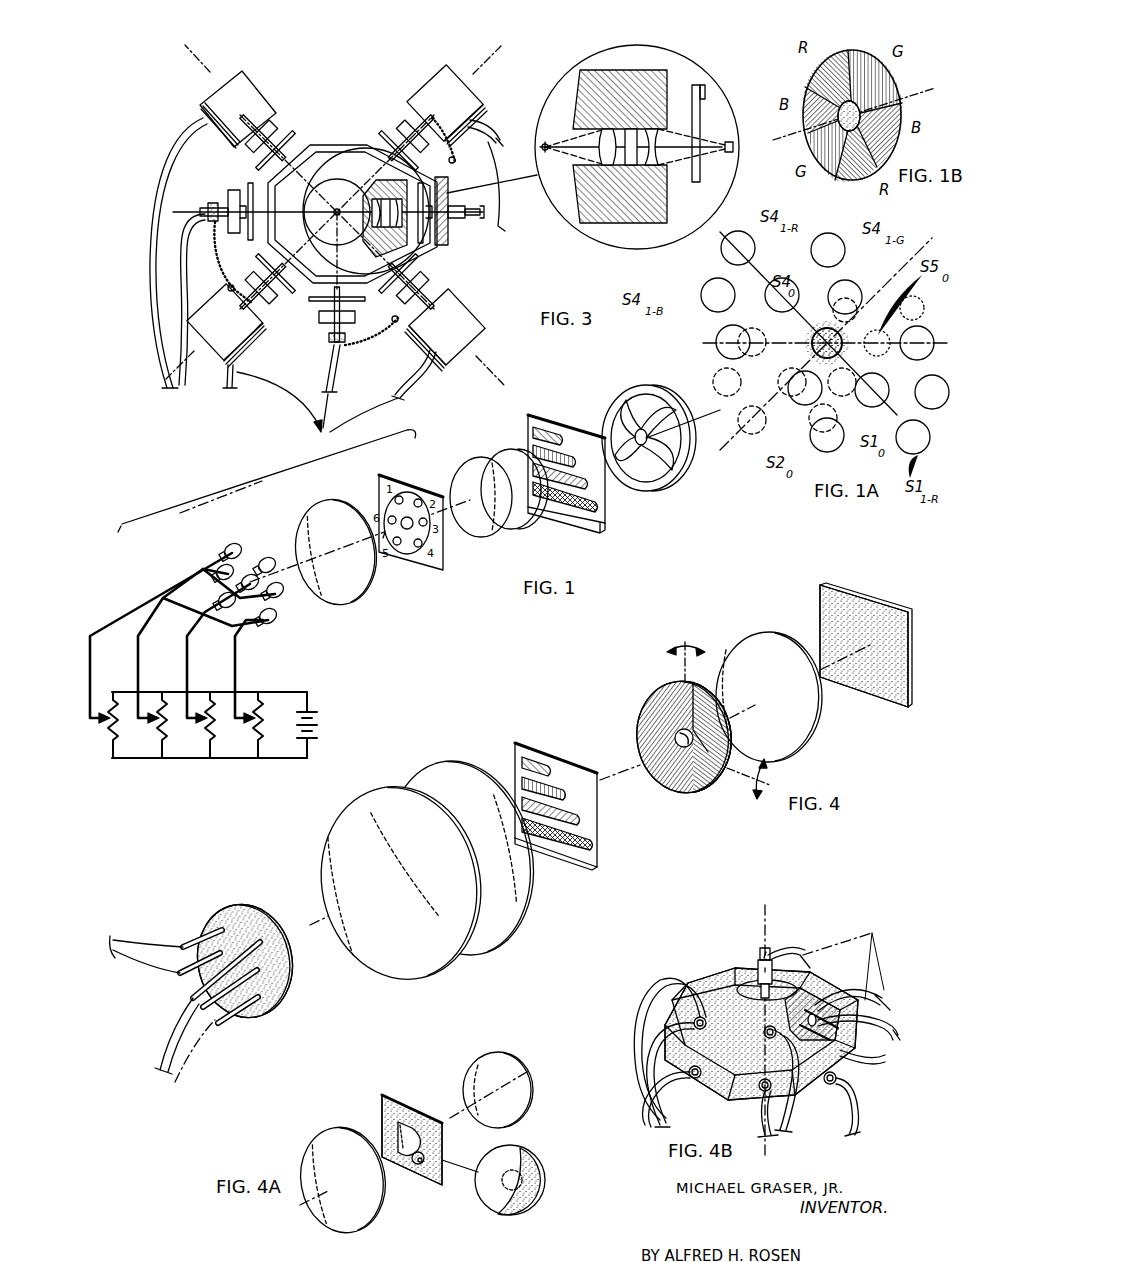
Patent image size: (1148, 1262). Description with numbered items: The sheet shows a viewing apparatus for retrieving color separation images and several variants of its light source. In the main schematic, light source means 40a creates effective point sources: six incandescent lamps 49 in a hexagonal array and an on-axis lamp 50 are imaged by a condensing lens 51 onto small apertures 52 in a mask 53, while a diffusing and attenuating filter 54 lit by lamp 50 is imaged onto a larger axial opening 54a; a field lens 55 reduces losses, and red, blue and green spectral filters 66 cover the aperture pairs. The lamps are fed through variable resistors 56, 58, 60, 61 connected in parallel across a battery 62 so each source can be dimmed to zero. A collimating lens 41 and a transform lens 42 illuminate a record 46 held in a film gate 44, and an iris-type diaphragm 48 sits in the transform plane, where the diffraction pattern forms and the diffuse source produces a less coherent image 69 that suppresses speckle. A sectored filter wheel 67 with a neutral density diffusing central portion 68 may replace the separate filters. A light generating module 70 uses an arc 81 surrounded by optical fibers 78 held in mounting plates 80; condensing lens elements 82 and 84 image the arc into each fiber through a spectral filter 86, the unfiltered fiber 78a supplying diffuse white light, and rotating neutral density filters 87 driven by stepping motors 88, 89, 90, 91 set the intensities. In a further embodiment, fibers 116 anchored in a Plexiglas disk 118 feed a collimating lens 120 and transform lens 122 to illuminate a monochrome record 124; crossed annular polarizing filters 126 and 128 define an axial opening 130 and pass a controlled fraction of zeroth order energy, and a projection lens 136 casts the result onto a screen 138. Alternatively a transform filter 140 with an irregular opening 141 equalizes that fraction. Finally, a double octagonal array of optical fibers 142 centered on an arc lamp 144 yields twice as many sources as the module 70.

In FIG. 3, the light generating module 70 is at (321, 95).
In FIG. 3, the optical fibers 78 is at (182, 300).
In FIG. 3, the optical fiber 78a is at (150, 283).
In FIG. 3, the mounting plates 80 is at (397, 108).
In FIG. 3, the arc 81 is at (320, 202).
In FIG. 3, the condensing lens element 82 is at (601, 127).
In FIG. 3, the condensing lens element 84 is at (652, 127).
In FIG. 3, the spectral filter 86 is at (630, 127).
In FIG. 3, the continuously varying neutral density filters 87 is at (381, 138).
In FIG. 3, the D.C. stepping-type motor 88 is at (235, 331).
In FIG. 3, the D.C. stepping-type motor 89 is at (457, 336).
In FIG. 3, the D.C. stepping-type motor 90 is at (455, 112).
In FIG. 3, the D.C. stepping-type motor 91 is at (248, 117).
In FIG. 1B, the sectored filter wheel 67 is at (851, 52).
In FIG. 1B, the neutral density diffusing central portion 68 is at (846, 131).
In FIG. 1A, the image 69 is at (810, 338).
In FIG. 1, the light source means 40a is at (280, 470).
In FIG. 1, the collimating lens 41 is at (474, 460).
In FIG. 1, the transform lens 42 is at (503, 452).
In FIG. 1, the film gate 44 is at (600, 533).
In FIG. 1, the record 46 is at (578, 428).
In FIG. 1, the iris-type diaphragm 48 is at (662, 488).
In FIG. 1, the incandescent lamps 49 is at (227, 548).
In FIG. 1, the on-axis lamp 50 is at (280, 606).
In FIG. 1, the condensing lens 51 is at (352, 600).
In FIG. 1, the apertures 52 is at (428, 538).
In FIG. 1, the mask 53 is at (440, 565).
In FIG. 1, the diffusing and attenuating filter 54 is at (265, 558).
In FIG. 1, the axial opening 54a is at (392, 505).
In FIG. 1, the field lens 55 is at (405, 545).
In FIG. 1, the variable resistor 56 is at (92, 726).
In FIG. 1, the variable resistor 58 is at (142, 726).
In FIG. 1, the variable resistor 60 is at (190, 726).
In FIG. 1, the variable resistor 61 is at (238, 726).
In FIG. 1, the battery 62 is at (318, 708).
In FIG. 1, the spectral filters 66 is at (420, 499).
In FIG. 4, the annular polarizing filter 126 is at (648, 700).
In FIG. 4, the annular polarizing filter 128 is at (712, 780).
In FIG. 4, the axial opening 130 is at (676, 735).
In FIG. 4, the projection lens 136 is at (815, 738).
In FIG. 4, the screen 138 is at (890, 700).
In FIG. 4A, the optical fibers 116 is at (215, 1022).
In FIG. 4A, the Plexiglas disk 118 is at (288, 1000).
In FIG. 4A, the collimating lens 120 is at (450, 955).
In FIG. 4A, the transform lens 122 is at (502, 925).
In FIG. 4A, the monochrome record 124 is at (592, 848).
In FIG. 4A, the transform filter 140 is at (384, 1100).
In FIG. 4A, the opening 141 is at (400, 1128).
In FIG. 4B, the optical fibers 142 is at (767, 1022).
In FIG. 4B, the arc lamp 144 is at (755, 968).